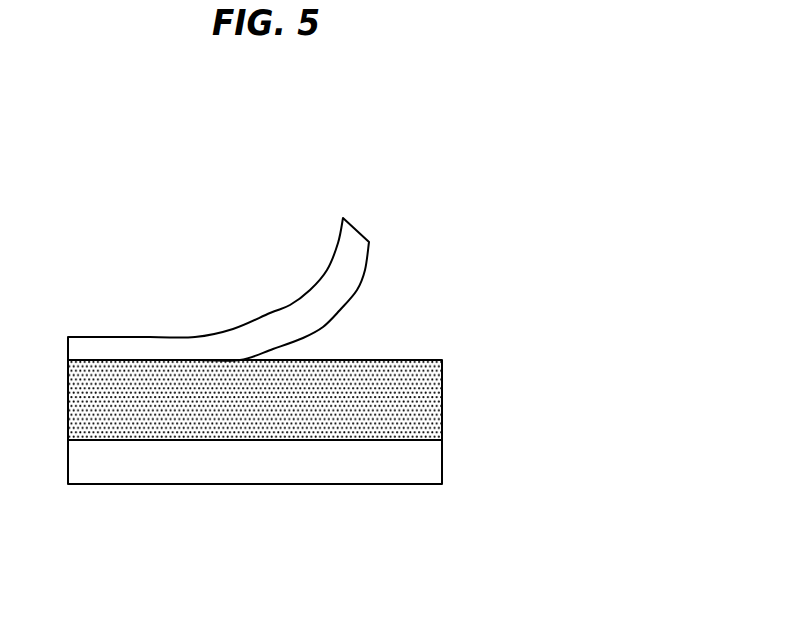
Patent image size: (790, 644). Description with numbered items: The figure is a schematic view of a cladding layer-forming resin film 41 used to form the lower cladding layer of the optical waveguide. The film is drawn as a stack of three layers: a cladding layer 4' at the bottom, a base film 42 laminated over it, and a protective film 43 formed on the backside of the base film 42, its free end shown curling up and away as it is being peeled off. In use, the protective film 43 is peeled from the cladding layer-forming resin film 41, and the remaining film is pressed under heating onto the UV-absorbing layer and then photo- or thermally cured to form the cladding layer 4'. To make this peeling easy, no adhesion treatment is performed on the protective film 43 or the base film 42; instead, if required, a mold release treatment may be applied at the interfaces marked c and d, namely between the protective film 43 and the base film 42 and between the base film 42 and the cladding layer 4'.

The cladding layer-forming resin film 41 is at (307, 329).
The protective film 43 is at (352, 268).
The base film 42 is at (420, 373).
The cladding layer 4' is at (324, 452).
The mold release treatment c is at (290, 337).
The mold release treatment d is at (142, 446).